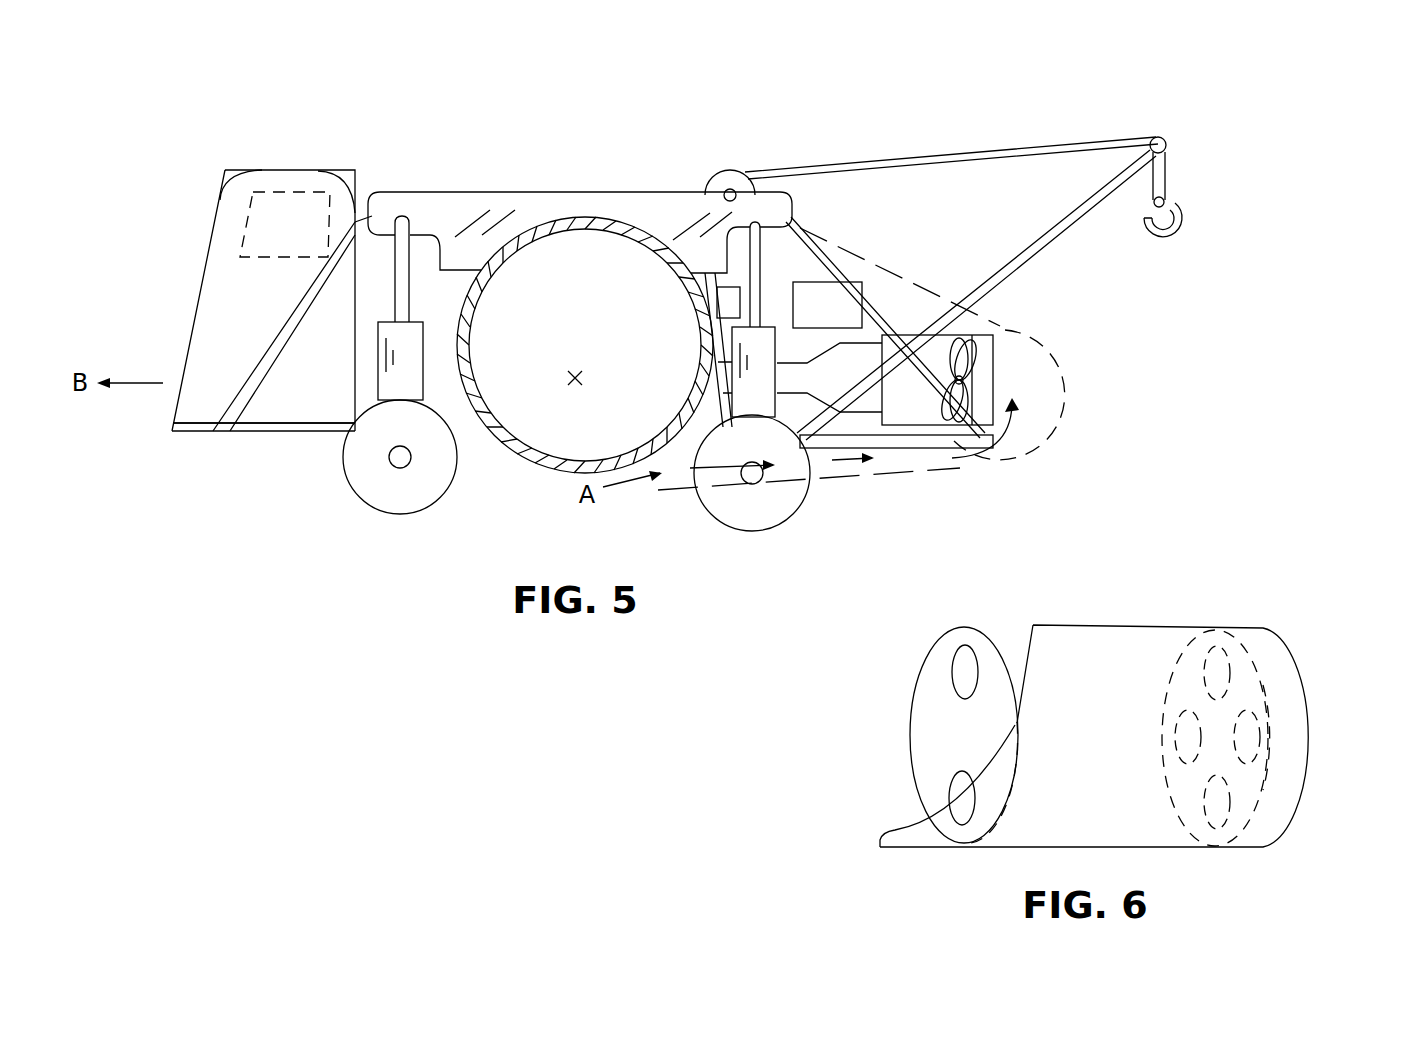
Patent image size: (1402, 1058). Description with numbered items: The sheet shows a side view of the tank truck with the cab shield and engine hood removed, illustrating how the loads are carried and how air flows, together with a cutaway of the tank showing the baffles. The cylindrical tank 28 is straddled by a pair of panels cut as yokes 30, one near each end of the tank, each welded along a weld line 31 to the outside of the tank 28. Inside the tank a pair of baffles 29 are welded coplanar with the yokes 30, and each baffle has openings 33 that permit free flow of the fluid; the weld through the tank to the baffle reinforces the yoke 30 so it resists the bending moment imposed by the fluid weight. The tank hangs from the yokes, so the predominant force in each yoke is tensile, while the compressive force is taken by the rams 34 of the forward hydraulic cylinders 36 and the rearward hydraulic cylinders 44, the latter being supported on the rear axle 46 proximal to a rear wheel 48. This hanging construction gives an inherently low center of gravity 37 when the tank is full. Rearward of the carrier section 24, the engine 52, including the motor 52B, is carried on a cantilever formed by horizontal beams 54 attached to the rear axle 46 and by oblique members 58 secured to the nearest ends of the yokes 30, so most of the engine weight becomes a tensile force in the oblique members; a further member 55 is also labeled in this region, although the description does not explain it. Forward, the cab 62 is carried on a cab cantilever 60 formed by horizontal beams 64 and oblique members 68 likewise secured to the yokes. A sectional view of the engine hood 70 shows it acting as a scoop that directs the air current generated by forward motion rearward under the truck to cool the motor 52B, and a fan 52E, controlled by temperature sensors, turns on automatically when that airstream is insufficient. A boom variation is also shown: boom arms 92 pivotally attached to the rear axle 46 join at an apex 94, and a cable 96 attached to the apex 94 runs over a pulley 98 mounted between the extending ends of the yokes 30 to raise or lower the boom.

In FIG. 6, the carrier section 24 is at (967, 628).
In FIG. 5, the tank 28 is at (613, 222).
In FIG. 6, the tank 28 is at (1275, 652).
In FIG. 5, the baffles 29 is at (543, 245).
In FIG. 6, the baffles 29 is at (1242, 642).
In FIG. 5, the yokes 30 is at (455, 192).
In FIG. 5, the weld line 31 is at (655, 236).
In FIG. 6, the weld line 31 is at (1270, 745).
In FIG. 6, the openings 33 is at (955, 780).
In FIG. 5, the rams 34 is at (407, 270).
In FIG. 5, the forward hydraulic cylinders 36 is at (418, 362).
In FIG. 5, the center of gravity 37 is at (575, 385).
In FIG. 5, the rearward hydraulic cylinders 44 is at (733, 397).
In FIG. 5, the rear axle 46 is at (752, 485).
In FIG. 5, the rear wheel 48 is at (405, 512).
In FIG. 5, the engine 52 is at (1030, 342).
In FIG. 5, the motor 52B is at (928, 413).
In FIG. 5, the fan 52E is at (973, 413).
In FIG. 5, the horizontal beams 54 is at (893, 443).
In FIG. 5, the strut 55 is at (803, 230).
In FIG. 5, the oblique members 58 is at (893, 333).
In FIG. 5, the cab cantilever 60 is at (248, 444).
In FIG. 5, the cab 62 is at (270, 170).
In FIG. 5, the horizontal beams 64 is at (305, 428).
In FIG. 5, the oblique members 68 is at (258, 362).
In FIG. 5, the engine hood 70 is at (1003, 325).
In FIG. 5, the boom arms 92 is at (1083, 200).
In FIG. 5, the apex 94 is at (1162, 137).
In FIG. 5, the cable 96 is at (1010, 158).
In FIG. 5, the pulley 98 is at (735, 178).